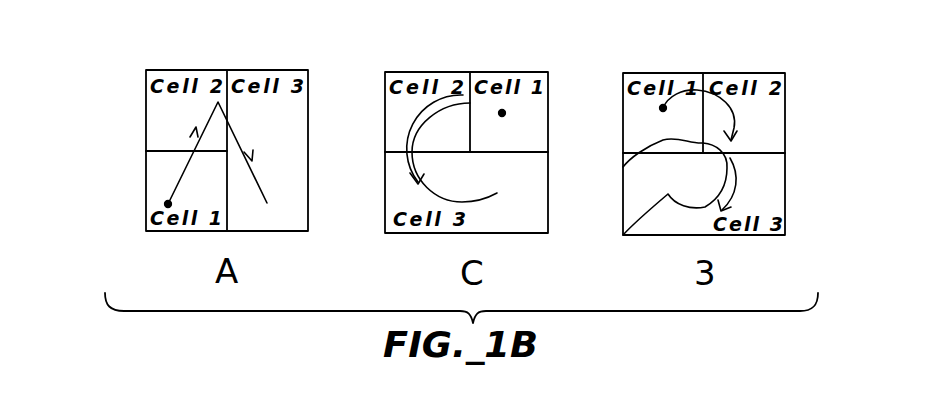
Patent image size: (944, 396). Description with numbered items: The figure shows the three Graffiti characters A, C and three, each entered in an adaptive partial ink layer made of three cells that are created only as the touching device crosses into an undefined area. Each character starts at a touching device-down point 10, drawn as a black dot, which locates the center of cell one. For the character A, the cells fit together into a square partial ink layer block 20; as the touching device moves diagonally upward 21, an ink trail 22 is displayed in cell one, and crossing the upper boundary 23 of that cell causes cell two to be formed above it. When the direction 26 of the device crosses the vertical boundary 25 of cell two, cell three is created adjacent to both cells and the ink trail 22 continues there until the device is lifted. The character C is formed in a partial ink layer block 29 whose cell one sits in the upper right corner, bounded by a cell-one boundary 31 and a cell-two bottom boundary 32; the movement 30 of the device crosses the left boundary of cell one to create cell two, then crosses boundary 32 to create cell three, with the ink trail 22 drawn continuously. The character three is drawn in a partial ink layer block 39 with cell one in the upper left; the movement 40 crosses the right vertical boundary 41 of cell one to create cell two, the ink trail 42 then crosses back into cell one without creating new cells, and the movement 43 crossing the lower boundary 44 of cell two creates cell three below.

The touching device-down point 10 is at (168, 204).
The partial ink layer block 20 is at (272, 70).
The diagonally upward movement 21 is at (187, 148).
The ink trail 22 is at (265, 187).
The upper boundary of cell 1 23 is at (160, 151).
The vertical boundary of cell 2 25 is at (222, 74).
The direction of the touching device 26 is at (250, 140).
The partial ink layer block 29 is at (417, 73).
The movement of the touching device 30 is at (412, 176).
The cell 1 of second scenario 31 is at (475, 72).
The cell 2 / cell 3 boundary 32 is at (393, 153).
The partial ink layer block 39 is at (670, 72).
The movement of the touching device 40 is at (737, 118).
The right vertical boundary of cell 1 41 is at (702, 90).
The ink trail 42 is at (637, 155).
The movement of the touching device 43 is at (733, 197).
The lower boundary of cell 2 44 is at (770, 153).